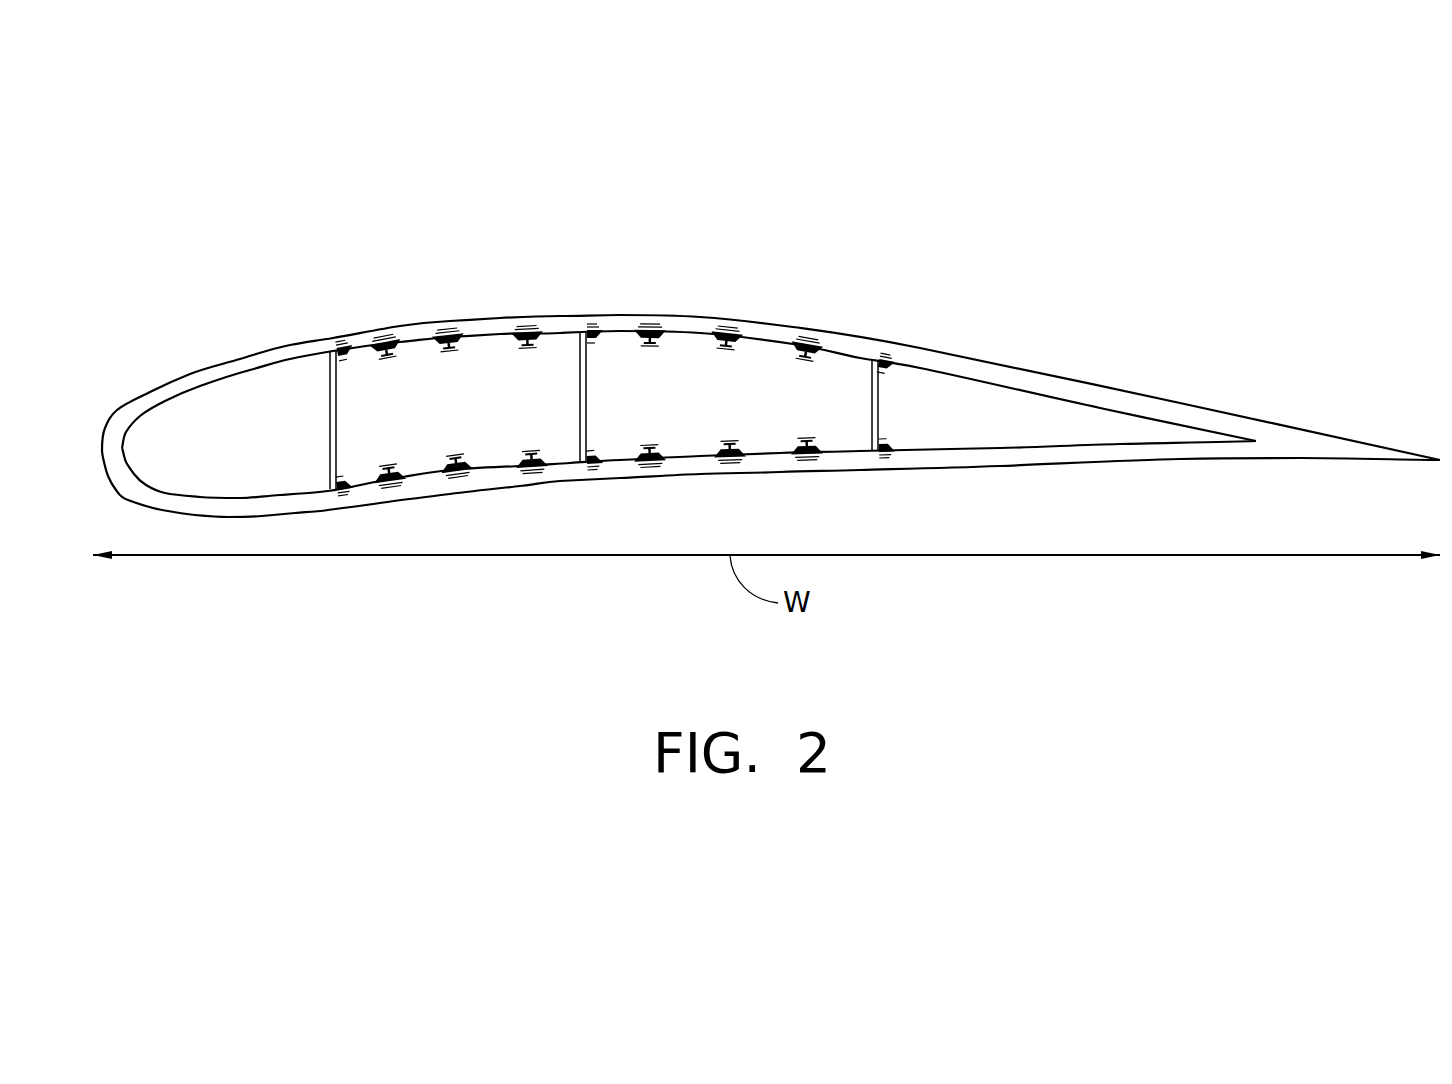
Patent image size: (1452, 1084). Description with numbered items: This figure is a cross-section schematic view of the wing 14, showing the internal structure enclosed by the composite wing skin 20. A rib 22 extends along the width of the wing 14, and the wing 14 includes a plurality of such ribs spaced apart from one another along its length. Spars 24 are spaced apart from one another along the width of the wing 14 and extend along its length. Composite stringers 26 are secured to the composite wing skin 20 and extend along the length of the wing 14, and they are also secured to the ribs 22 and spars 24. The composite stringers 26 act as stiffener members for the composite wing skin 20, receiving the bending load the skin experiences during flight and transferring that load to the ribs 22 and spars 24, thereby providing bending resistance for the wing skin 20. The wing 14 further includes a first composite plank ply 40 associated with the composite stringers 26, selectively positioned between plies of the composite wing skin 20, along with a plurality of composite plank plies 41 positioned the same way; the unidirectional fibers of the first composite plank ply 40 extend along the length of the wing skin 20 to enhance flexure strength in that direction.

The wing 14 is at (768, 381).
The composite wing skin 20 is at (613, 324).
The rib 22 is at (205, 437).
The spars 24 is at (330, 407).
The composite stringers 26 is at (395, 452).
The first composite plank ply 40 is at (381, 340).
The composite plank plies 41 is at (775, 336).